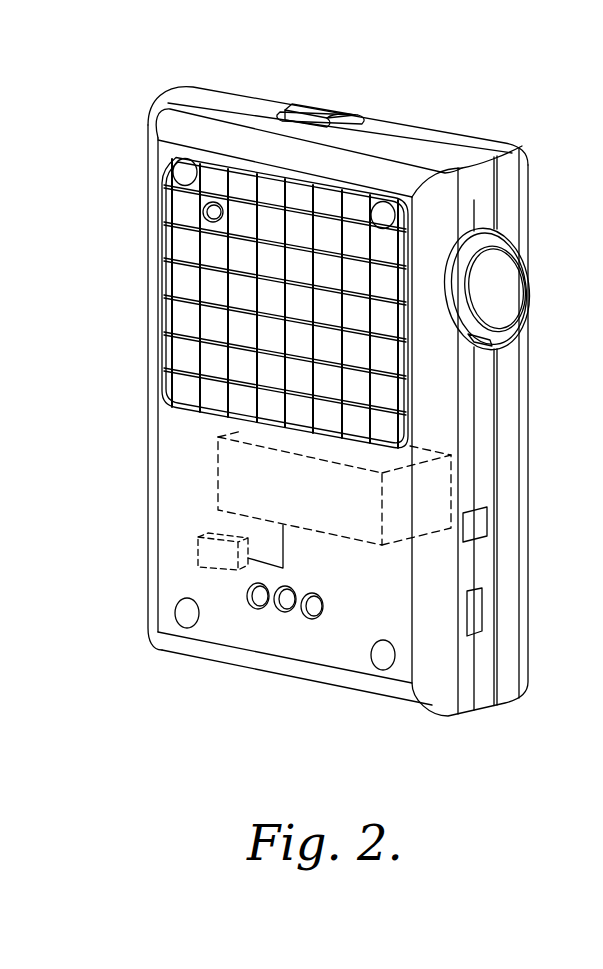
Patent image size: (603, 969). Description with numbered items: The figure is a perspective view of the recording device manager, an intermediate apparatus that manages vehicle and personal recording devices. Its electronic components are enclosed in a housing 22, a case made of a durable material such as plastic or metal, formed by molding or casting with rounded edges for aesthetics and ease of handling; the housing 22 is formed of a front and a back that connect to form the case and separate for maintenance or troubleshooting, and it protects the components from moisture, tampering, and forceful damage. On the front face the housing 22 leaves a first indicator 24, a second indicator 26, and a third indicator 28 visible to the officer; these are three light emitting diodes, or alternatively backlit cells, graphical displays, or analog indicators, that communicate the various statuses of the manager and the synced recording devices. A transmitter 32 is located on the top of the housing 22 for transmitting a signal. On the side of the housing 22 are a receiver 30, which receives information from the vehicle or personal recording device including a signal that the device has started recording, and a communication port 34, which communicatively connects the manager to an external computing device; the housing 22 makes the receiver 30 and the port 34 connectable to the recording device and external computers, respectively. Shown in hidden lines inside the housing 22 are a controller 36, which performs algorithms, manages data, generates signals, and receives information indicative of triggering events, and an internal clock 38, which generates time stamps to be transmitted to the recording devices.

The housing 22 is at (148, 373).
The first indicator 24 is at (257, 606).
The second indicator 26 is at (284, 609).
The third indicator 28 is at (313, 616).
The receiver 30 is at (477, 617).
The transmitter 32 is at (318, 108).
The communication port 34 is at (477, 527).
The controller 36 is at (452, 473).
The internal clock 38 is at (203, 548).